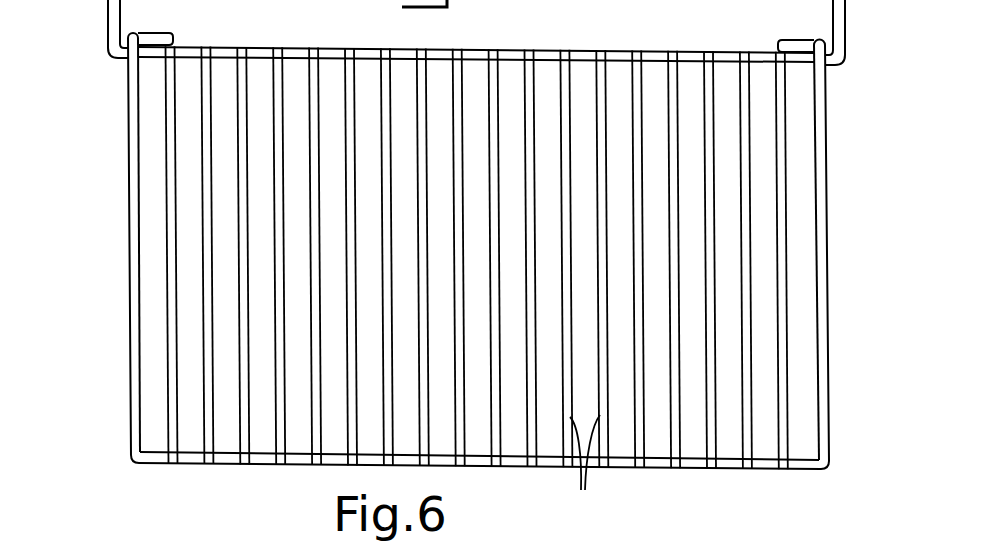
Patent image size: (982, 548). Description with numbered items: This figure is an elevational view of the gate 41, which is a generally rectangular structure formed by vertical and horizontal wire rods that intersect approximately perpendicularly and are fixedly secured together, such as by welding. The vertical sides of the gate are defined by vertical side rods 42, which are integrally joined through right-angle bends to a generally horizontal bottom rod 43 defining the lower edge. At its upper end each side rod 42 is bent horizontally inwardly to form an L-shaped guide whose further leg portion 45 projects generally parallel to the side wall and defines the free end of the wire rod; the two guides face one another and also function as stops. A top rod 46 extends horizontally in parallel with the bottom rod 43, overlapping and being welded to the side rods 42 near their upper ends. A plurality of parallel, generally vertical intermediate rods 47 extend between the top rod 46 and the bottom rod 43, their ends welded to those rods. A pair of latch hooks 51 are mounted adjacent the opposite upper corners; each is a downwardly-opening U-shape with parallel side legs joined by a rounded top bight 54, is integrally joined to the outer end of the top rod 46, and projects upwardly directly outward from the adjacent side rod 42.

The gate 41 is at (478, 264).
The vertical side rods 42 is at (131, 232).
The bottom rod 43 is at (688, 468).
The leg portion 45 is at (148, 33).
The top rod 46 is at (613, 50).
The intermediate rods 47 is at (583, 471).
The latch hooks 51 is at (108, 3).
The rounded top bight 54 is at (138, 534).